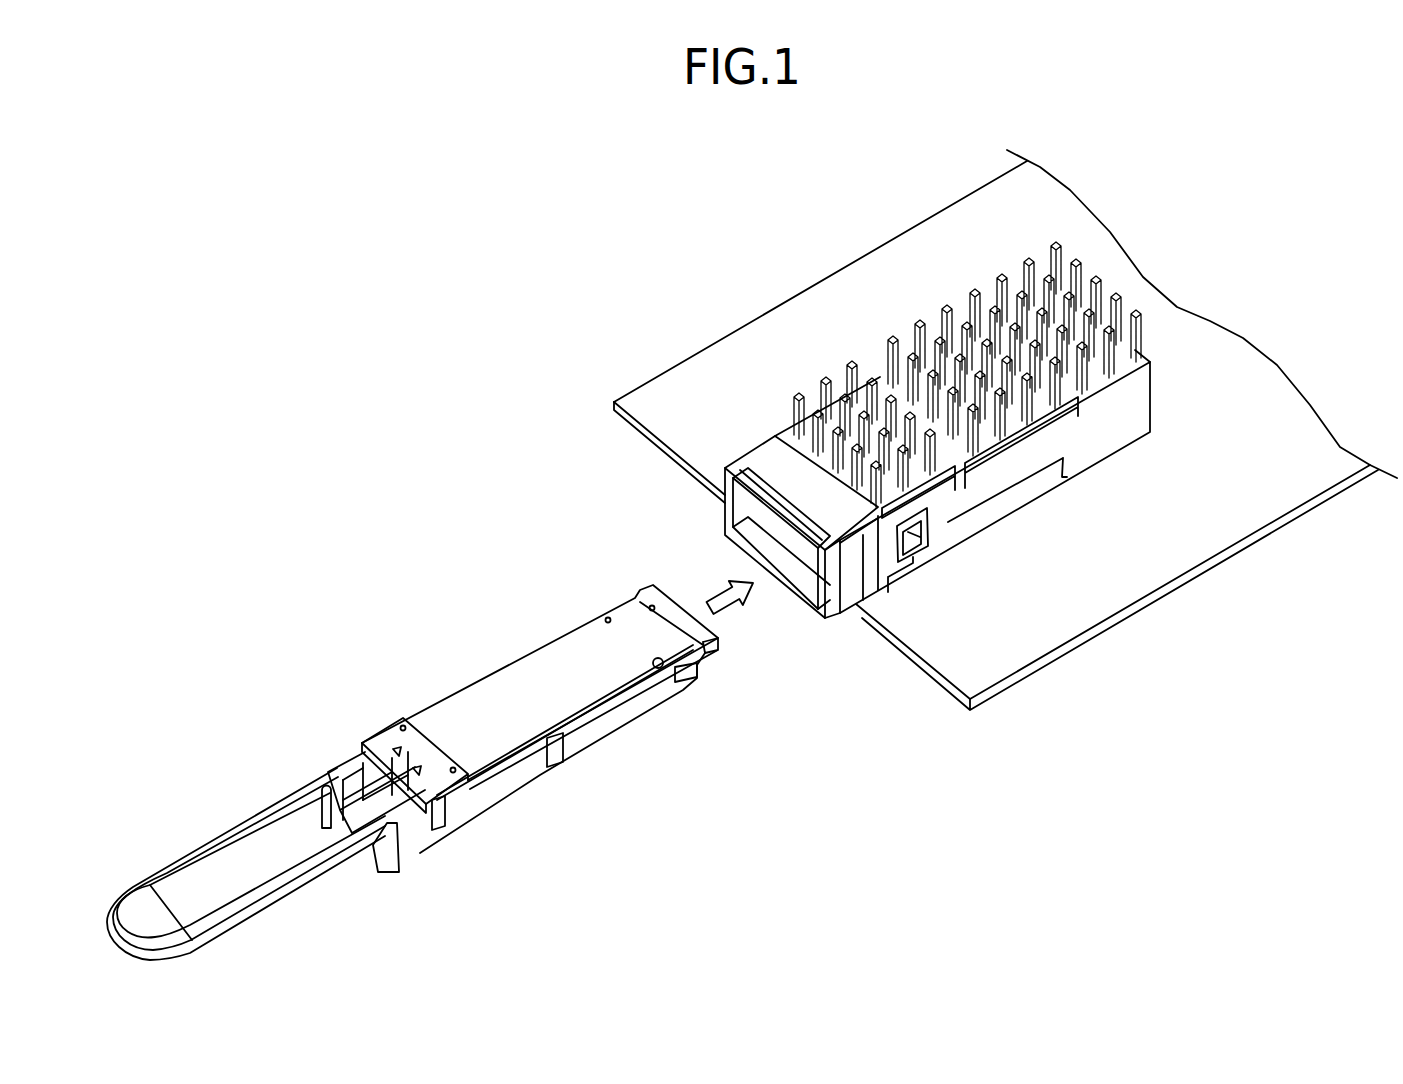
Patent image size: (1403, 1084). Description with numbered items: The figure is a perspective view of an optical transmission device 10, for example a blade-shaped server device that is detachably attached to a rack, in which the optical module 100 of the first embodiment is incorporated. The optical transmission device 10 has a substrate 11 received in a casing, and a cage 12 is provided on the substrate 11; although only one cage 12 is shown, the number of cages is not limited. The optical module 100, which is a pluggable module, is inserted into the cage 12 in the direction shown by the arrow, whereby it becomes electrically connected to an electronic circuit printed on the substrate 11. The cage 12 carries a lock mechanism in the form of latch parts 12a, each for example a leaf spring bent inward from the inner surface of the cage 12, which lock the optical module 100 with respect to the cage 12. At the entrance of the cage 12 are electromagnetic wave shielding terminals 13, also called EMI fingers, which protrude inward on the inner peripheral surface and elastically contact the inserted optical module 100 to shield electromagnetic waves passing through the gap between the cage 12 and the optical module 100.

The optical transmission device 10 is at (911, 465).
The substrate 11 is at (943, 665).
The cage 12 is at (1118, 430).
The latch part 12a is at (908, 533).
The electromagnetic wave shielding terminal 13 is at (785, 543).
The optical module 100 is at (349, 628).